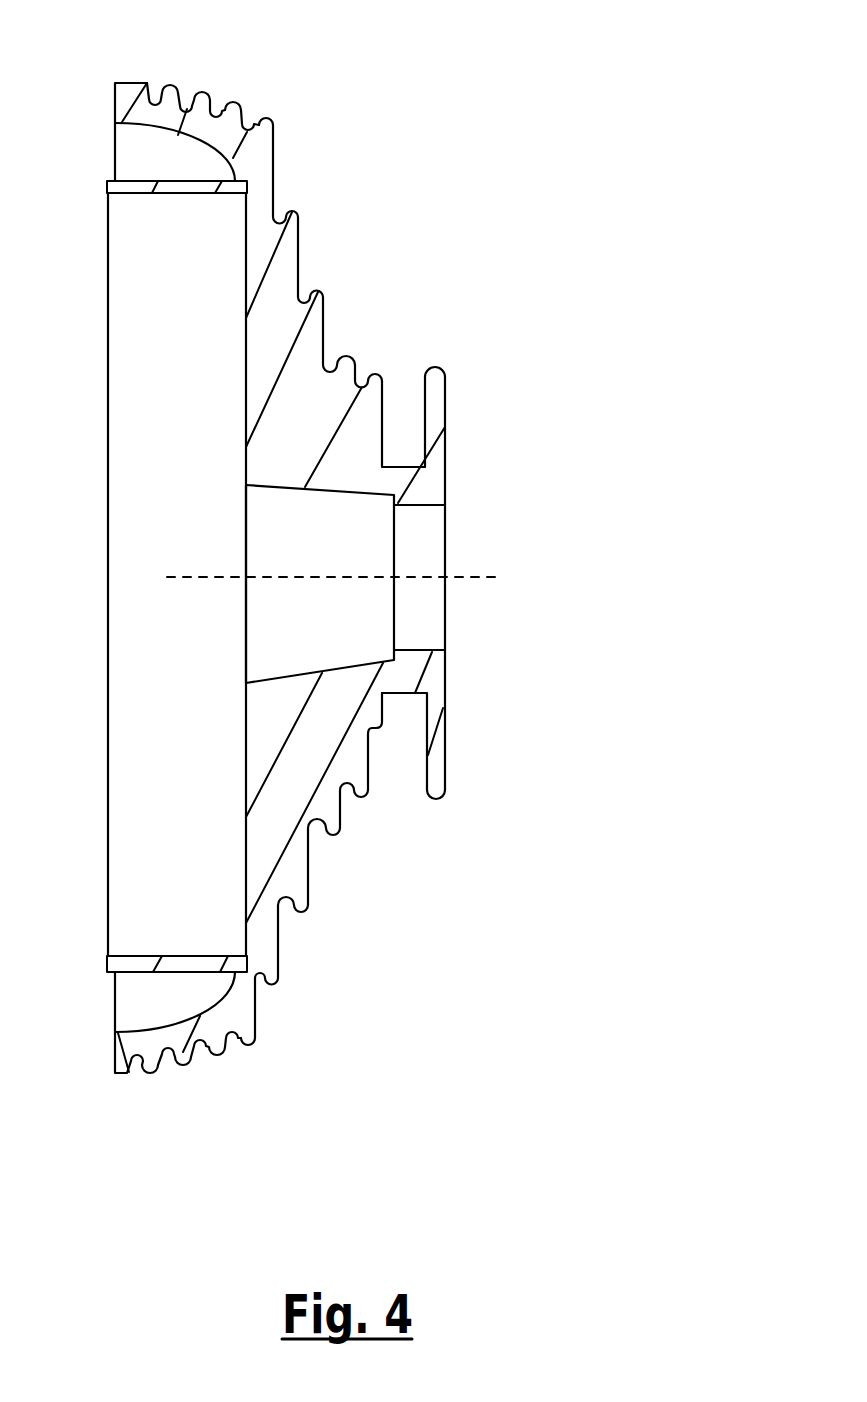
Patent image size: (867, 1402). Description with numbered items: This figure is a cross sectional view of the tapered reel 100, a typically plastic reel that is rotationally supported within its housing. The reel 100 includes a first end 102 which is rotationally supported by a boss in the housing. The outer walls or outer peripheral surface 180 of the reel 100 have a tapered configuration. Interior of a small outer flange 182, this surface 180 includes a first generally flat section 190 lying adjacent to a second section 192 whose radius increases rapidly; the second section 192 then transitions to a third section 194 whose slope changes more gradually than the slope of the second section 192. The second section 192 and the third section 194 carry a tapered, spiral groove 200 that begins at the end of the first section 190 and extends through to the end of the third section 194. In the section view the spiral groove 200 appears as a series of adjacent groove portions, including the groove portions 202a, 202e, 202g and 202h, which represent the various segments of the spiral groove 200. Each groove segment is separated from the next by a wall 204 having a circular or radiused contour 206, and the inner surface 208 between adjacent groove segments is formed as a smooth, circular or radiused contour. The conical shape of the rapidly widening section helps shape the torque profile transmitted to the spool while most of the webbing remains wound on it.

The tapered reel 100 is at (703, 160).
The first end 102 is at (420, 510).
The outer peripheral surface 180 is at (308, 867).
The small outer flange 182 is at (435, 383).
The first generally flat section 190 is at (405, 438).
The second section 192 is at (298, 156).
The third section 194 is at (185, 88).
The spiral groove 200 is at (293, 930).
The groove portion 202a is at (365, 370).
The groove portion 202e is at (248, 110).
The groove portion 202g is at (157, 1075).
The groove portion 202h is at (135, 1076).
The wall 204 is at (248, 1016).
The radiused contour 206 is at (246, 1050).
The inner surface 208 is at (320, 817).